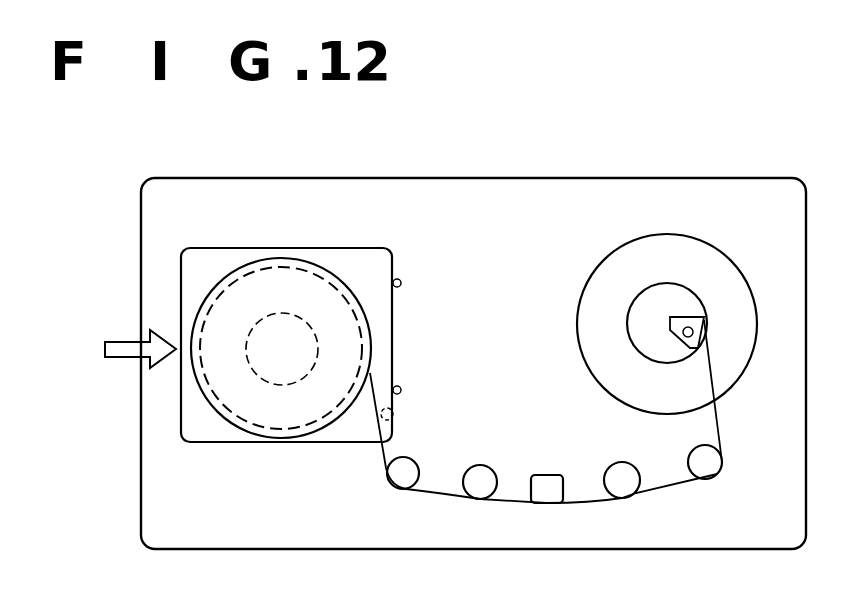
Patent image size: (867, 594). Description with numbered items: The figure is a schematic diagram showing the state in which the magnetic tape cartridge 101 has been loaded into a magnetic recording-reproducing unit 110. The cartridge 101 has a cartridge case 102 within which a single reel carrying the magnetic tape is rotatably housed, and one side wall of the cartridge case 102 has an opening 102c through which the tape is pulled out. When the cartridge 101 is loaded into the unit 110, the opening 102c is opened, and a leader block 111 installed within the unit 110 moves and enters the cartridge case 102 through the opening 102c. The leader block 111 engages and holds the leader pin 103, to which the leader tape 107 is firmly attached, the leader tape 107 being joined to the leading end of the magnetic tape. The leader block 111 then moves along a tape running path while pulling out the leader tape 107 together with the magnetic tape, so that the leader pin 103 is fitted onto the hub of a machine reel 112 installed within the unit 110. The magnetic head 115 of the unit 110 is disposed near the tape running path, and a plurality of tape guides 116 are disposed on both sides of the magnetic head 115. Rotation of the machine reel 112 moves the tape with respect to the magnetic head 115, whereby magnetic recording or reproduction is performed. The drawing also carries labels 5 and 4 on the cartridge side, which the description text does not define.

The magnetic recording-reproducing unit 110 is at (530, 168).
The magnetic tape cartridge 101 is at (216, 240).
The cartridge case 102 is at (376, 250).
The opening 102c is at (372, 442).
The guide pin 5 is at (363, 305).
The guide pin 4 is at (370, 386).
The tape guides 116 is at (478, 470).
The magnetic head 115 is at (547, 476).
The leader tape 107 is at (720, 430).
The machine reel 112 is at (688, 250).
The leader block 111 is at (704, 317).
The leader pin 103 is at (684, 337).